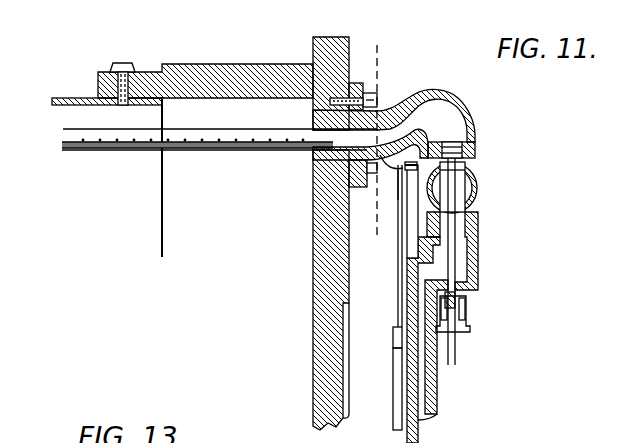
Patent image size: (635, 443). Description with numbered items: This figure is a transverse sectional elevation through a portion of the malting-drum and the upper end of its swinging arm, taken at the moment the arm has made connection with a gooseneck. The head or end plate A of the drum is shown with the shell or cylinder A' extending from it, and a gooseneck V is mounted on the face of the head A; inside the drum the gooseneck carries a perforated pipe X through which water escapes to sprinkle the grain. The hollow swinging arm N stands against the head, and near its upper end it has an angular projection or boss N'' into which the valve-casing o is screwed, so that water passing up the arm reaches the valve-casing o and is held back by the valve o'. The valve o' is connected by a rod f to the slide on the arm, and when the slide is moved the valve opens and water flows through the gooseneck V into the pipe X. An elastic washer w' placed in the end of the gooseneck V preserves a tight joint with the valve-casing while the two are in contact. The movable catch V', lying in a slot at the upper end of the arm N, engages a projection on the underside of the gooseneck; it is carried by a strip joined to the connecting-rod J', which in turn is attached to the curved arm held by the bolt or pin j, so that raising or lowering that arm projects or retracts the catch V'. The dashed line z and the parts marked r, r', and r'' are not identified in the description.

The head or end plate A is at (328, 233).
The shell or cylinder A' is at (182, 160).
The perforated pipe X is at (219, 150).
The gooseneck V is at (404, 124).
The movable catch V' is at (386, 190).
The axis line z is at (371, 130).
The elastic washer w' is at (473, 154).
The valve o' is at (468, 188).
The valve-casing o is at (469, 187).
The angular projection or boss N'' is at (470, 251).
The swinging arm N is at (442, 352).
The lip r is at (391, 167).
The rod r' is at (390, 246).
The bracket r'' is at (408, 302).
The rod f is at (455, 365).
The bolt or pin j is at (393, 337).
The connecting-rod J' is at (383, 389).